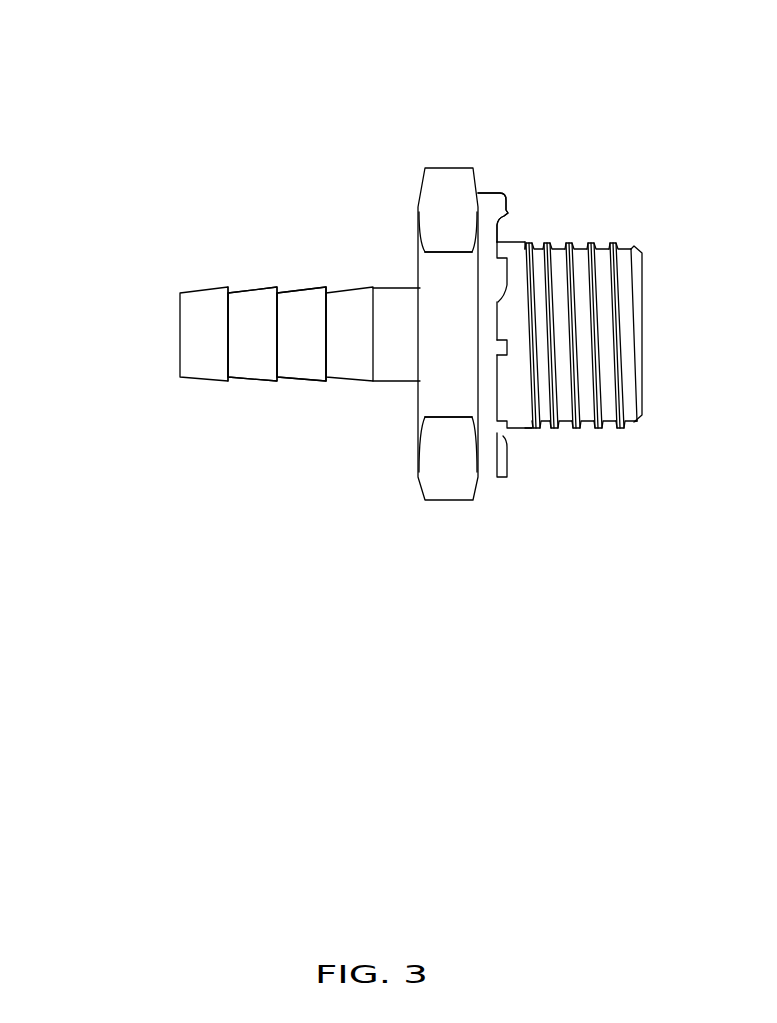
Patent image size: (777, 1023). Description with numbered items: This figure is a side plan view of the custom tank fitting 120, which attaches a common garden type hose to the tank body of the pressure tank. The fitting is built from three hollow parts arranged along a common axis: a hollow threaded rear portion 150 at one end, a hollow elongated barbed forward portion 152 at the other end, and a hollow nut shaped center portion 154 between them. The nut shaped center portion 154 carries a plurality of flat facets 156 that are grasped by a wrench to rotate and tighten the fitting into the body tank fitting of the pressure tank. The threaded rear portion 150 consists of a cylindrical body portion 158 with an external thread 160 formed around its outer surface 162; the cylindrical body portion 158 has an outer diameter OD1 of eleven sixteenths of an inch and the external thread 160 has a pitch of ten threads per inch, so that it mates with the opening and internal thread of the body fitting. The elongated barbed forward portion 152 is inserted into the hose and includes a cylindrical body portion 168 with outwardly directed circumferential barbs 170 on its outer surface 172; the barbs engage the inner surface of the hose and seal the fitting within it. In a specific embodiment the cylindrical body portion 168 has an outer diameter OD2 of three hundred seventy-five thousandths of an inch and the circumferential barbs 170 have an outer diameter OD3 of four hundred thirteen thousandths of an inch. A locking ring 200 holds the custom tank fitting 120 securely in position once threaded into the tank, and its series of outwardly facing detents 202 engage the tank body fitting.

The custom tank fitting 120 is at (157, 44).
The threaded rear portion 150 is at (635, 248).
The elongated barbed forward portion 152 is at (190, 290).
The nut shaped center portion 154 is at (448, 168).
The flat facets 156 is at (437, 203).
The cylindrical body portion 158 is at (518, 400).
The external thread 160 is at (570, 243).
The outer surface 162 is at (612, 421).
The cylindrical body portion 168 is at (288, 289).
The circumferential barbs 170 is at (228, 383).
The outer surface 172 is at (233, 290).
The locking ring 200 is at (484, 210).
The outwardly facing detents 202 is at (507, 208).
The outer diameter of cylindrical body portion OD1 is at (699, 249).
The outer diameter of cylindrical body portion OD2 is at (180, 377).
The outer diameter of circumferential barbs OD3 is at (180, 381).